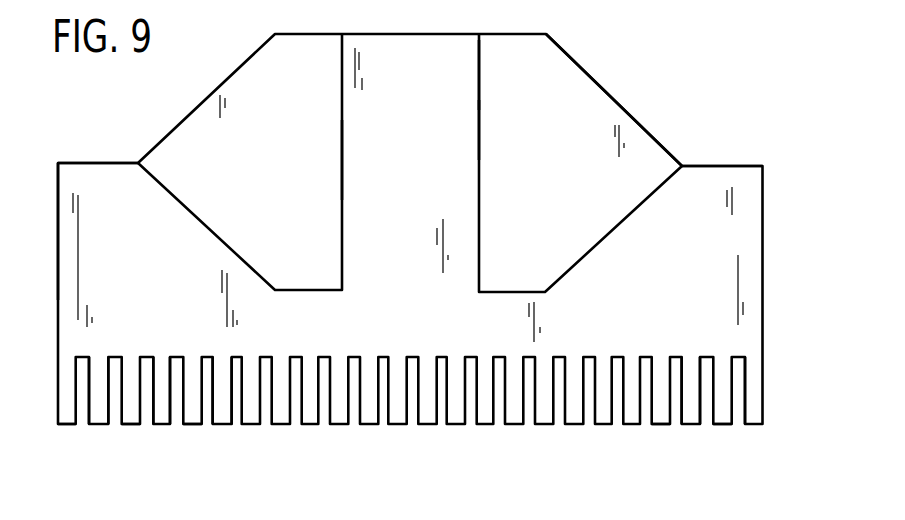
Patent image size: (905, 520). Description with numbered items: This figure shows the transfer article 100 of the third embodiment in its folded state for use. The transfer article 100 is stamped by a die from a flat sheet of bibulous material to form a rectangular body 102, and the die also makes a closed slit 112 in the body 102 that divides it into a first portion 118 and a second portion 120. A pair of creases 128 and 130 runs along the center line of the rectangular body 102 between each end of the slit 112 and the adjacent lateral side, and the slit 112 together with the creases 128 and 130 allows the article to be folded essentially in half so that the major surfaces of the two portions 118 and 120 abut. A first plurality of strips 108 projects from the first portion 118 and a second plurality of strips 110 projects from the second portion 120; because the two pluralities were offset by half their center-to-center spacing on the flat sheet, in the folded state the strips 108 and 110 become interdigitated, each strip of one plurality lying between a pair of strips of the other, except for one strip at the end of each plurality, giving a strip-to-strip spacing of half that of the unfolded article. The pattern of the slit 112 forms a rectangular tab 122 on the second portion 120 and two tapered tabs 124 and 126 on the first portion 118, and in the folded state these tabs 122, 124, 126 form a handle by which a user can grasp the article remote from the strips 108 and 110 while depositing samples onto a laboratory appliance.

The transfer article 100 is at (657, 124).
The rectangular body 102 is at (587, 114).
The first plurality of strips 108 is at (99, 425).
The second plurality of strips 110 is at (70, 425).
The closed slit 112 is at (480, 207).
The first portion 118 is at (276, 196).
The second portion 120 is at (171, 307).
The rectangular tab 122 is at (437, 135).
The tapered tab 124 is at (323, 147).
The tapered tab 126 is at (523, 73).
The crease 128 is at (81, 162).
The crease 130 is at (723, 166).